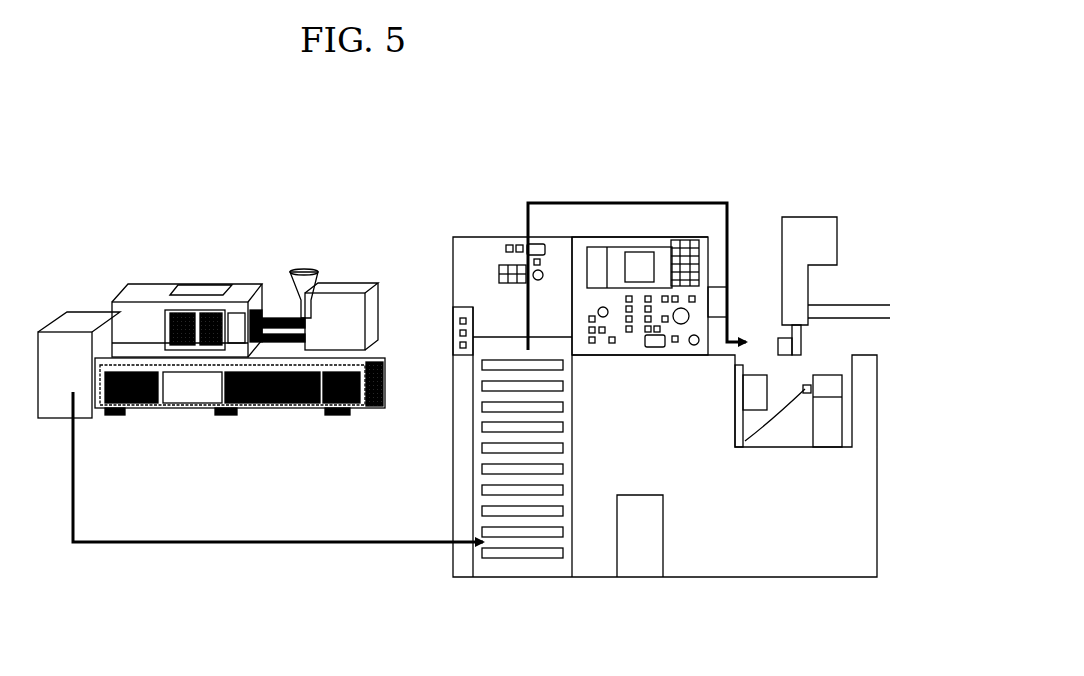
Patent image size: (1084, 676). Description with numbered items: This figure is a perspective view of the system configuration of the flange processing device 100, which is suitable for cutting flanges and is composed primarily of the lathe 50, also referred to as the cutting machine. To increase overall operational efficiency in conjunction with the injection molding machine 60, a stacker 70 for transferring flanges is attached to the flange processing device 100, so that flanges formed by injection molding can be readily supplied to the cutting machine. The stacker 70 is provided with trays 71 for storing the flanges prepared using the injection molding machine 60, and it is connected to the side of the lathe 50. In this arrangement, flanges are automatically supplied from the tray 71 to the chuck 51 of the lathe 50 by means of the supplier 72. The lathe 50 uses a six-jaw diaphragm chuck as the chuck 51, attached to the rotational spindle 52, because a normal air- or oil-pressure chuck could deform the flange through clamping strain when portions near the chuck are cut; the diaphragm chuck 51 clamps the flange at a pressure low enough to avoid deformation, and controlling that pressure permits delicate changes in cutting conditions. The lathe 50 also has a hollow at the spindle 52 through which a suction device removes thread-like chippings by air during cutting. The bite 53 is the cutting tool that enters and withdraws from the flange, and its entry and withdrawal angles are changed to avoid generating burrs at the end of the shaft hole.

The flange processing device 100 is at (140, 623).
The stacker 70 is at (62, 340).
The injection molding machine 60 is at (333, 244).
The lathe 50 is at (698, 170).
The trays 71 is at (482, 447).
The chuck 51 is at (757, 397).
The spindle 52 is at (748, 411).
The bite 53 is at (741, 447).
The supplier 72 is at (799, 226).